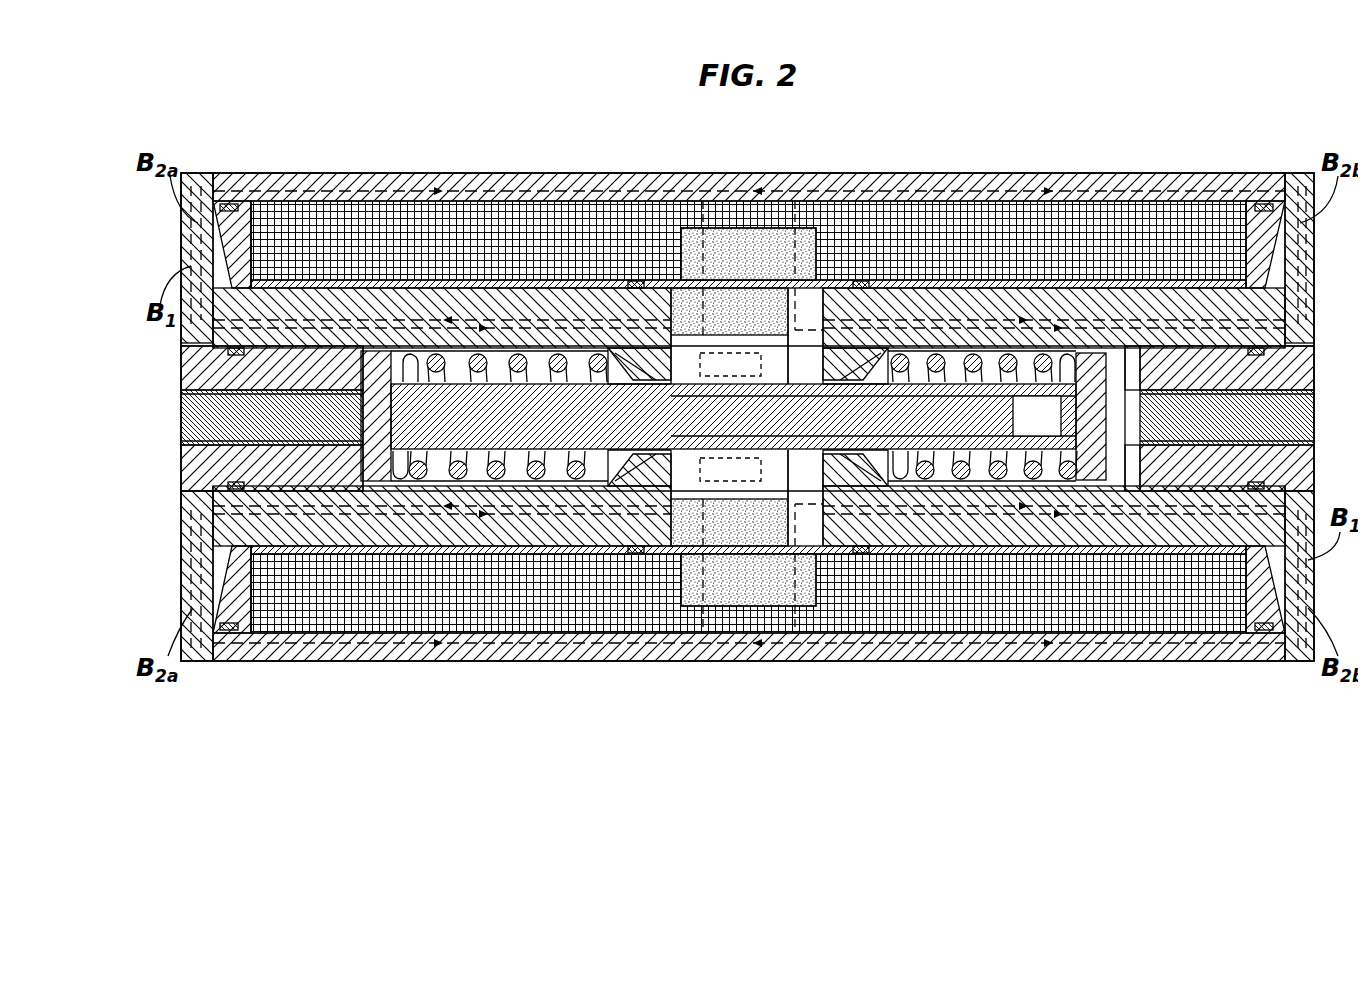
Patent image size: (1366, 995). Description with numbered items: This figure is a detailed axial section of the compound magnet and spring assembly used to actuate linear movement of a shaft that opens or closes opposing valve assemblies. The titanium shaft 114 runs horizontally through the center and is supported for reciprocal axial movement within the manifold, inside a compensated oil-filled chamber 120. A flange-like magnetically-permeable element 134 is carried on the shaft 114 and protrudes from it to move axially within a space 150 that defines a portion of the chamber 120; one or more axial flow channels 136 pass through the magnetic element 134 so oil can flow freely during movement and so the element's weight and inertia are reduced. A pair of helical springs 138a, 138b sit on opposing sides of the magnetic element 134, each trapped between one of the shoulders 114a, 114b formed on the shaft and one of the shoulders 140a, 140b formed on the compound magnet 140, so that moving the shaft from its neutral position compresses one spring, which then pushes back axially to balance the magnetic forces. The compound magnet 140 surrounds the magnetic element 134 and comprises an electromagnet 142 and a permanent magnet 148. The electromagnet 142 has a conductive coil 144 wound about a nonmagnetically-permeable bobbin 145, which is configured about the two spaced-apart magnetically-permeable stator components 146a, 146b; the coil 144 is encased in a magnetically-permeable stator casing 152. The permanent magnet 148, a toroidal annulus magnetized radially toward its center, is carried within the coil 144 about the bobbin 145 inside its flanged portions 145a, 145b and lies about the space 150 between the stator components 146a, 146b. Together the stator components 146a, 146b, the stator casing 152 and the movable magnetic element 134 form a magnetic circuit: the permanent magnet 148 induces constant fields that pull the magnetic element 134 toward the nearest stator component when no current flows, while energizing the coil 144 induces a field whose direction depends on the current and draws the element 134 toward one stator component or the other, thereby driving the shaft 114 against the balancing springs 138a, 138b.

The shaft 114 is at (747, 418).
The shoulder 114a is at (368, 350).
The shoulder 114b is at (1078, 470).
The compensated oil-filled chamber 120 is at (805, 480).
The magnetically-permeable element 134 is at (729, 417).
The axial flow channel 136 is at (680, 480).
The helical spring 138a is at (532, 462).
The helical spring 138b is at (990, 465).
The compound magnet 140 is at (1103, 143).
The shoulder 140a is at (603, 355).
The shoulder 140b is at (880, 350).
The electromagnet 142 is at (270, 143).
The conductive coil 144 is at (748, 417).
The bobbin 145 is at (540, 270).
The flanged portion 145a is at (655, 275).
The flanged portion 145b is at (858, 548).
The stator component 146a is at (475, 520).
The stator component 146b is at (1170, 520).
The permanent magnet 148 is at (748, 417).
The space 150 is at (828, 292).
The stator casing 152 is at (1196, 165).